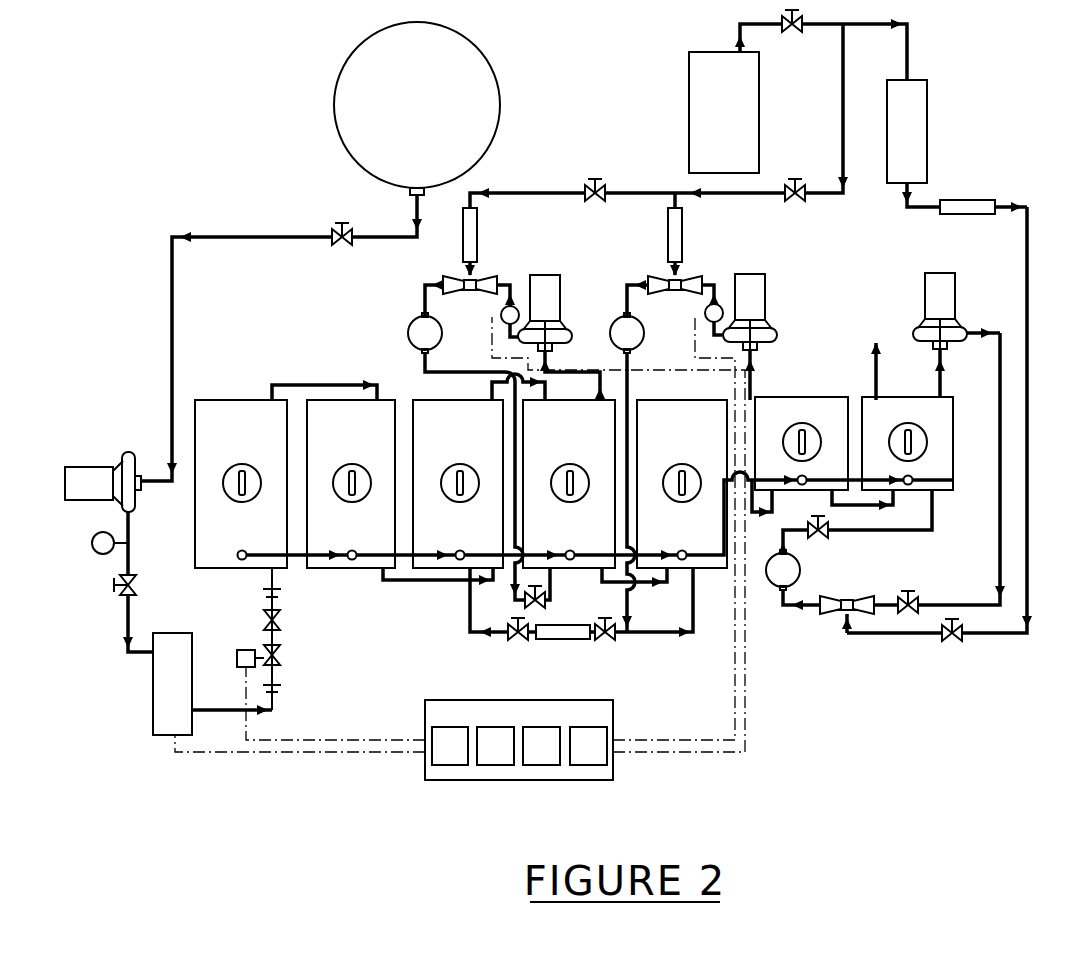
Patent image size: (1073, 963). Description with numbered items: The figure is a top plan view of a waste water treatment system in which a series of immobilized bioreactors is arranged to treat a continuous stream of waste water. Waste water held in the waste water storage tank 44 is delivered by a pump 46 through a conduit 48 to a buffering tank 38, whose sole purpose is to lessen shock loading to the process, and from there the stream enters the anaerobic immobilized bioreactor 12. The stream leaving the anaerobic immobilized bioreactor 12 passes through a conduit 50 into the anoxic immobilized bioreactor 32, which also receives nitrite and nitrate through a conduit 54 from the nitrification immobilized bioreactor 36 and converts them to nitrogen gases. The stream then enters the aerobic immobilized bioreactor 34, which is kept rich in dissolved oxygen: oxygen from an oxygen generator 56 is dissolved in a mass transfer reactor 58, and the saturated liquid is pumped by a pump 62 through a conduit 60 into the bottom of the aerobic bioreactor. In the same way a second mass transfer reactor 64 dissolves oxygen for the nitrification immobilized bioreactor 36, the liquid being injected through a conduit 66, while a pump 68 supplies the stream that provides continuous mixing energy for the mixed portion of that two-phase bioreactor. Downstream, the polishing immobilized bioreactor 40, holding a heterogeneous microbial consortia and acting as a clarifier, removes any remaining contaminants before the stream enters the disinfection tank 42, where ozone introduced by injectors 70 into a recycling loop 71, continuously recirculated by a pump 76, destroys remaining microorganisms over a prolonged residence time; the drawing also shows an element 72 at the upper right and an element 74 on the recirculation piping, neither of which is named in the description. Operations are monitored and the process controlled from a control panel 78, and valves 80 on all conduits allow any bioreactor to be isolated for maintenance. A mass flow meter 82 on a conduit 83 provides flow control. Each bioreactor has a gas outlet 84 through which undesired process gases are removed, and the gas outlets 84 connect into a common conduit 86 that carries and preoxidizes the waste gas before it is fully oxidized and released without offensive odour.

The anaerobic immobilized bioreactor 12 is at (392, 415).
The anoxic immobilized bioreactor 32 is at (483, 435).
The aerobic immobilized bioreactor 34 is at (597, 437).
The nitrification immobilized bioreactor 36 is at (717, 447).
The buffering tank 38 is at (228, 453).
The polishing immobilized bioreactor 40 is at (828, 437).
The disinfection tank 42 is at (907, 412).
The waste water storage tank 44 is at (378, 127).
The pump 46 is at (118, 471).
The conduit 48 is at (185, 338).
The conduit 50 is at (406, 587).
The conduit 54 is at (663, 637).
The oxygen generator 56 is at (710, 147).
The mass transfer reactor 58 is at (412, 332).
The conduit 60 is at (480, 368).
The pump 62 is at (534, 302).
The second mass transfer reactor 64 is at (622, 312).
The conduit 66 is at (652, 360).
The pump 68 is at (755, 303).
The injectors 70 is at (832, 614).
The recycling loop 71 is at (997, 433).
The filter 72 is at (905, 137).
The pressure gauge 74 is at (780, 580).
The pump 76 is at (925, 300).
The control panel 78 is at (472, 772).
The valves 80 is at (122, 575).
The mass flow meter 82 is at (170, 715).
The conduit 83 is at (123, 610).
The gas outlet 84 is at (238, 556).
The common conduit 86 is at (292, 560).